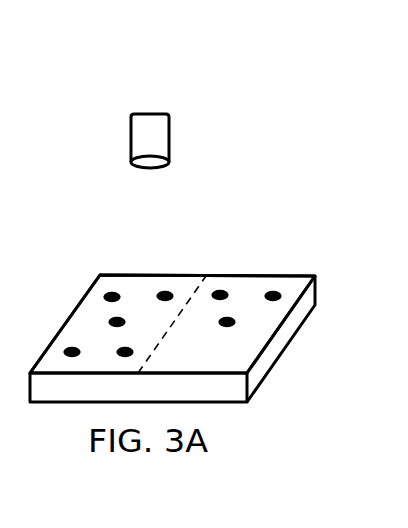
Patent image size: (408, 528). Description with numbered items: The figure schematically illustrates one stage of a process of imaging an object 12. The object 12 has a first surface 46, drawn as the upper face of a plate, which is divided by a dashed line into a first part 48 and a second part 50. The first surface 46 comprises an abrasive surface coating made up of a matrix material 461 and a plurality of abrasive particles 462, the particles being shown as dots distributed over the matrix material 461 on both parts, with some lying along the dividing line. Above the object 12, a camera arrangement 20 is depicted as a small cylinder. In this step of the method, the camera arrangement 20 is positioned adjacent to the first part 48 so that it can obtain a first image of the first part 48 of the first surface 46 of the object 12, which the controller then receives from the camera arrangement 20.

The object 12 is at (183, 294).
The camera arrangement 20 is at (150, 130).
The first surface 46 is at (208, 348).
The matrix material 461 is at (80, 325).
The abrasive particles 462 is at (220, 293).
The first part 48 is at (132, 293).
The second part 50 is at (238, 292).